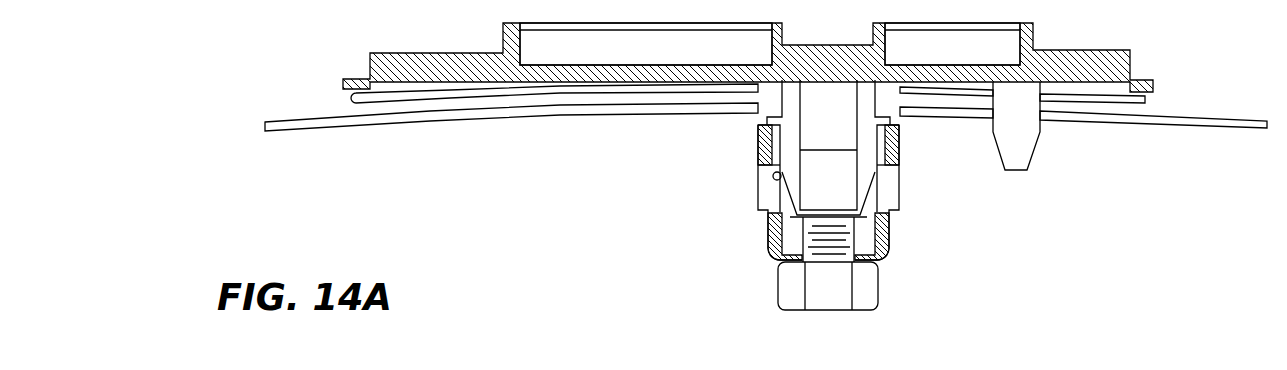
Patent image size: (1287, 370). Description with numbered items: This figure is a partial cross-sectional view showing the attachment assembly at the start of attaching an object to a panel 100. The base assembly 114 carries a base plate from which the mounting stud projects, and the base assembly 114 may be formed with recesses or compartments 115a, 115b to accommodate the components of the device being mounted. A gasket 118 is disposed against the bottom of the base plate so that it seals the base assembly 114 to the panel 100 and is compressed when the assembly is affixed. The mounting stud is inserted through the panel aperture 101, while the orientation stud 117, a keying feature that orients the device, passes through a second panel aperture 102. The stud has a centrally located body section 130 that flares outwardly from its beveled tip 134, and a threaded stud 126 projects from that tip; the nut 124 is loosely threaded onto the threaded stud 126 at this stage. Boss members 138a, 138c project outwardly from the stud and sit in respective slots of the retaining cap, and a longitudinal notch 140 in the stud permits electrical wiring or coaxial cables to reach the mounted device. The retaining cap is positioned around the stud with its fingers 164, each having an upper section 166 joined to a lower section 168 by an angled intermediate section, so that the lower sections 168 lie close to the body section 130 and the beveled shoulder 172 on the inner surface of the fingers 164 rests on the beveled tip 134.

The panel 100 is at (470, 123).
The aperture 101 is at (890, 110).
The aperture 102 is at (1040, 117).
The base assembly 114 is at (1130, 60).
The compartment 115a is at (646, 44).
The compartment 115b is at (952, 44).
The orientation stud 117 is at (1025, 150).
The gasket 118 is at (386, 100).
The nut 124 is at (792, 287).
The threaded stud 126 is at (883, 252).
The body section 130 is at (868, 178).
The tip 134 is at (850, 240).
The boss member 138a is at (758, 205).
The boss member 138c is at (893, 206).
The notch 140 is at (846, 187).
The finger 164 is at (903, 158).
The upper section 166 is at (768, 232).
The lower section 168 is at (757, 136).
The beveled shoulder 172 is at (773, 174).